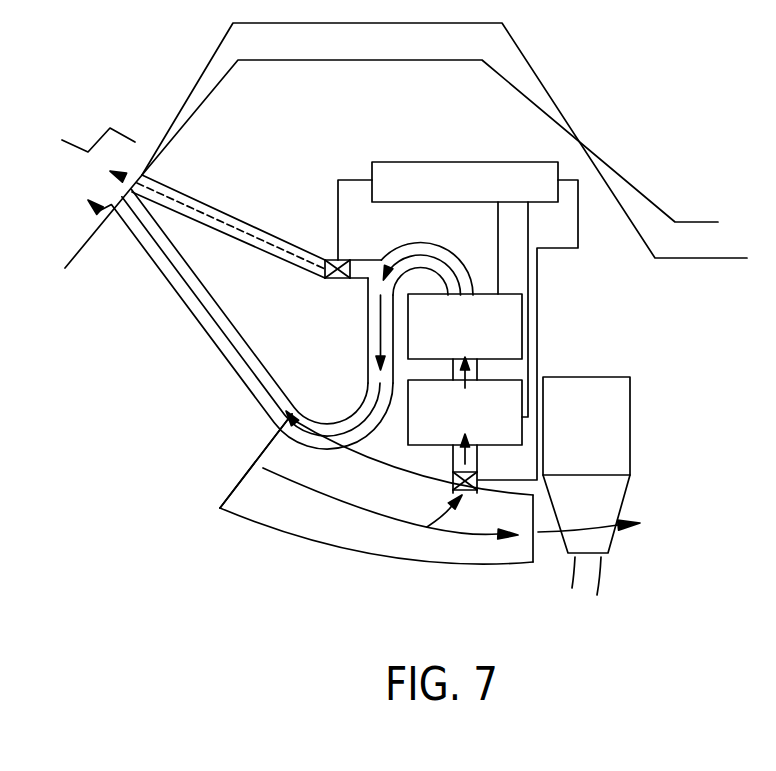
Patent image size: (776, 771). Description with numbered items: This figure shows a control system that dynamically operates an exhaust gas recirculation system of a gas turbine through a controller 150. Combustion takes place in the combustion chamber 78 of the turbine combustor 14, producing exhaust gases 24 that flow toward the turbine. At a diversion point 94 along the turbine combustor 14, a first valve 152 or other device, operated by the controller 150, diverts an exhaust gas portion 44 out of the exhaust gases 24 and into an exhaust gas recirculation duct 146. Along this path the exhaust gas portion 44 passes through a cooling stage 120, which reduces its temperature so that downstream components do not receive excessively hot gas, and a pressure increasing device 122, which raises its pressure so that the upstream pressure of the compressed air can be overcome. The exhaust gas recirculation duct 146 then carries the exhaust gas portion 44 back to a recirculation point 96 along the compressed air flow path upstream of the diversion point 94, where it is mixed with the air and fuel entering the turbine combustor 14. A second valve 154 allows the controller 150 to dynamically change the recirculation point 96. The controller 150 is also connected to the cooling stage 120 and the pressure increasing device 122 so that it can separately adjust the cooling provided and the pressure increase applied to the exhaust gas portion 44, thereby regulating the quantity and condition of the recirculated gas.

The turbine combustor 14 is at (258, 433).
The exhaust gases 24 is at (458, 532).
The exhaust gas portion 44 is at (378, 327).
The combustion chamber 78 is at (288, 517).
The diversion point 94 is at (469, 507).
The recirculation point 96 is at (139, 159).
The cooling stage 120 is at (486, 429).
The pressure increasing device 122 is at (485, 343).
The exhaust gas recirculation duct 146 is at (423, 242).
The controller 150 is at (464, 162).
The first valve 152 is at (464, 478).
The second valve 154 is at (326, 262).